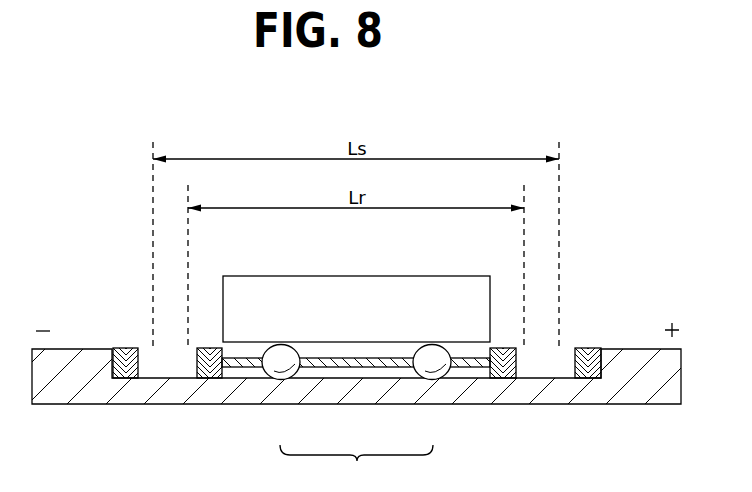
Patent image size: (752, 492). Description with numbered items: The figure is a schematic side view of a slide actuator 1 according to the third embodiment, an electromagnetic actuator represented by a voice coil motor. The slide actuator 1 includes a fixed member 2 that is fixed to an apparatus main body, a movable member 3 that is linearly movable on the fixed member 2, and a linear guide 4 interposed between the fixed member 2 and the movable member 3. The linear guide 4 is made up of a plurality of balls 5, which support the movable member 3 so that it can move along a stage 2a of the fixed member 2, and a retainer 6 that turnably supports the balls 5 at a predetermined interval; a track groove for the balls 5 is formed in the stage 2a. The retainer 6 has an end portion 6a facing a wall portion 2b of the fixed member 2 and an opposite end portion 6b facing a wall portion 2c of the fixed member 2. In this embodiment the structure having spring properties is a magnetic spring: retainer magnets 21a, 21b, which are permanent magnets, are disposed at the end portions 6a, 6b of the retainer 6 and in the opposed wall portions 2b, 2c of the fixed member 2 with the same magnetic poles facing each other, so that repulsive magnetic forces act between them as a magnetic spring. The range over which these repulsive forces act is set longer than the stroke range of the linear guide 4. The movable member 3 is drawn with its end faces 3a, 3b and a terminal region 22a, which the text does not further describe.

The slide actuator 1 is at (592, 180).
The fixed member 2 is at (681, 372).
The stage 2a is at (150, 378).
The wall portion 2b is at (602, 362).
The wall portion 2c is at (110, 366).
The movable member 3 is at (360, 276).
The first end surface of electronic component 3a is at (490, 290).
The second end surface of electronic component 3b is at (222, 290).
The linear guide 4 is at (356, 468).
The balls 5 is at (297, 374).
The retainer 6 is at (358, 368).
The end portion 6a is at (490, 370).
The end portion 6b is at (228, 368).
The retainer magnet 21a is at (197, 368).
The retainer magnet 21b is at (125, 348).
The terminal electrode of electronic component 22a is at (489, 320).